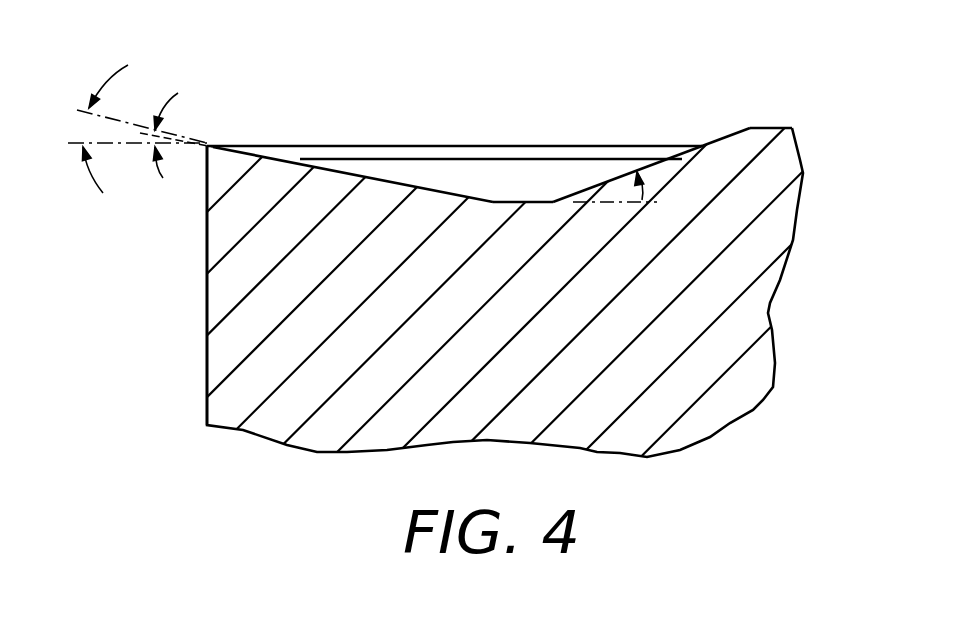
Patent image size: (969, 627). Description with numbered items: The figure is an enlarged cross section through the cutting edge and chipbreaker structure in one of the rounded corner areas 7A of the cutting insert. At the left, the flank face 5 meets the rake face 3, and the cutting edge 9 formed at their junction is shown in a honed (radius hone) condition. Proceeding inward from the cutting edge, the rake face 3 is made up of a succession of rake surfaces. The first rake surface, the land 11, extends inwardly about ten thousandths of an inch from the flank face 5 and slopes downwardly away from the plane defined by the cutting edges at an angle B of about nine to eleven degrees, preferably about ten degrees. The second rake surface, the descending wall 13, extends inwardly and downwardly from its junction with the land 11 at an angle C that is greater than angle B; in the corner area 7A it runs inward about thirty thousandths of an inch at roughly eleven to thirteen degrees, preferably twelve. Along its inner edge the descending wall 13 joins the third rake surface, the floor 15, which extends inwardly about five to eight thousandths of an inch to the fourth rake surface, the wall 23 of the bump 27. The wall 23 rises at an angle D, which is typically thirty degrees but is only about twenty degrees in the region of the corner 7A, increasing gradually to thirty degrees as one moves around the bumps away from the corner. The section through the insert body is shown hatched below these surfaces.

The rake face 3 is at (478, 165).
The flank face 5 is at (218, 331).
The corner area 7A is at (218, 287).
The cutting edge 9 is at (207, 146).
The land 11 is at (355, 152).
The descending wall 13 is at (420, 167).
The floor 15 is at (522, 200).
The wall 23 is at (610, 177).
The bump 27 is at (777, 123).
The angle B is at (178, 93).
The angle C is at (128, 65).
The angle D is at (647, 187).